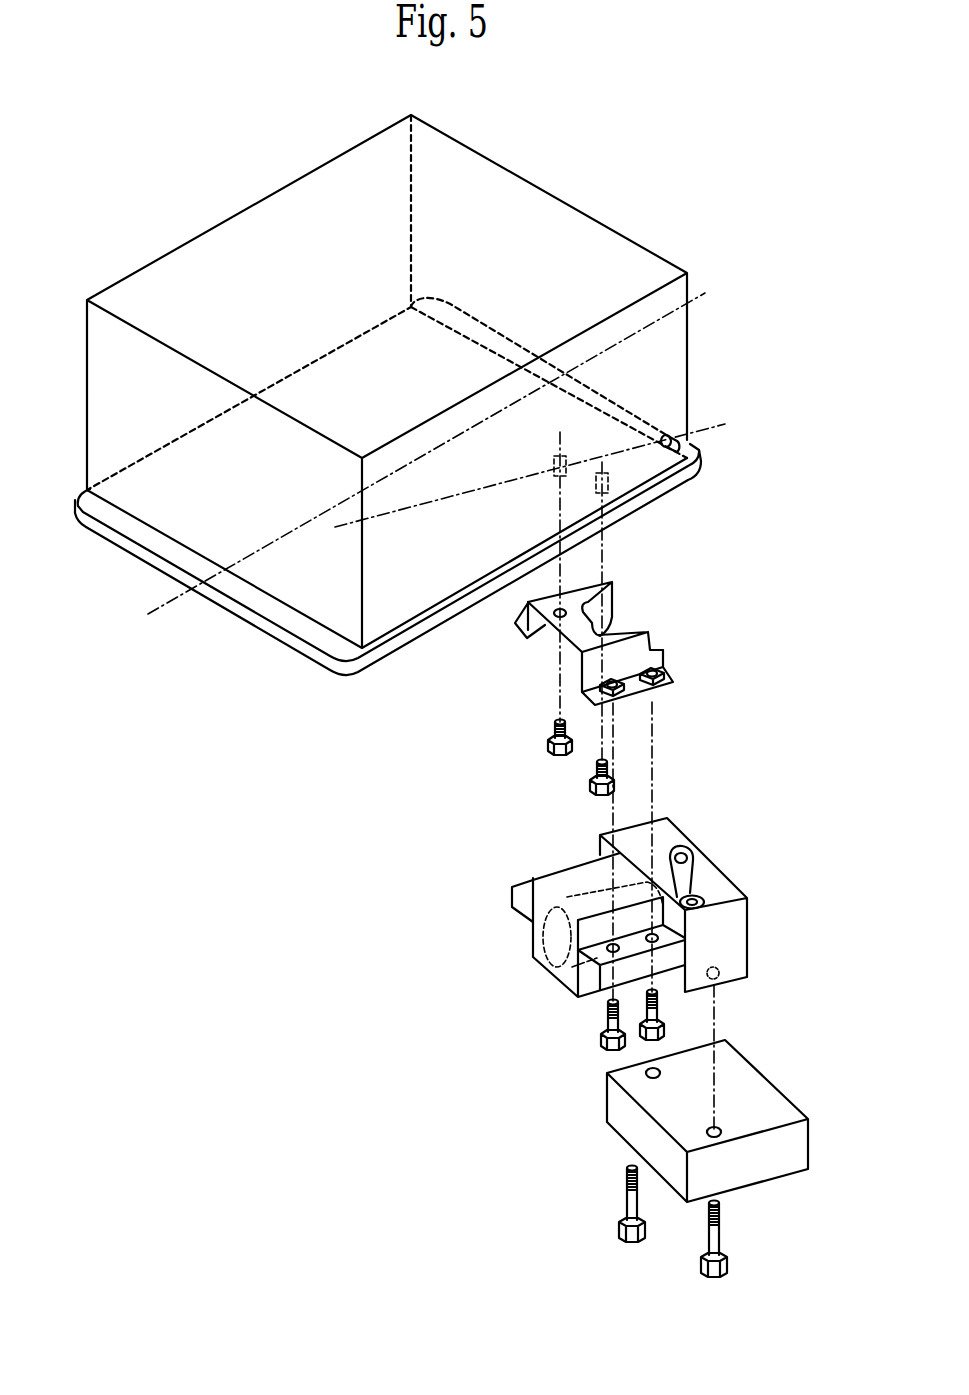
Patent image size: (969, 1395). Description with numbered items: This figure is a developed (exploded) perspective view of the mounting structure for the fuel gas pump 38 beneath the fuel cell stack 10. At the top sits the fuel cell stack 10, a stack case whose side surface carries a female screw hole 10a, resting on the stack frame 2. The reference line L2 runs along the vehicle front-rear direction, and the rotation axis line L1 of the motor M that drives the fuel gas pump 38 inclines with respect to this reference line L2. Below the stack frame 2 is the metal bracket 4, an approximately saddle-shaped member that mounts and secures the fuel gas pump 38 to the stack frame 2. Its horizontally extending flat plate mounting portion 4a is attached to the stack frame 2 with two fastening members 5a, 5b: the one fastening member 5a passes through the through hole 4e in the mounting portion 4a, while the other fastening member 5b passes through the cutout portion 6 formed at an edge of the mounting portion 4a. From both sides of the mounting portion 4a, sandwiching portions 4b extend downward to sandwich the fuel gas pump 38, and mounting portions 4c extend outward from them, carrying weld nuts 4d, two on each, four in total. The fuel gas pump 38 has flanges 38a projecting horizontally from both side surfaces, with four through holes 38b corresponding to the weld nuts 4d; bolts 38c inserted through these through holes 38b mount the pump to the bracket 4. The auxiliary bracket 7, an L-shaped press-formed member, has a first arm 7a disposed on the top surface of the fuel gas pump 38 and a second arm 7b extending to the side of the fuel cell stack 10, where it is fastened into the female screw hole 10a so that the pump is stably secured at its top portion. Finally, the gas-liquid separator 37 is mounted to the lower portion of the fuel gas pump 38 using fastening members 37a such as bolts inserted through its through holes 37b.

The fuel cell stack 10 is at (230, 232).
The female screw hole 10a is at (680, 443).
The stack frame 2 is at (125, 528).
The reference line L2 is at (147, 615).
The cutout portion 6 is at (636, 717).
The bracket 4 is at (636, 717).
The mounting portion 4a is at (633, 583).
The sandwiching portion 4b is at (663, 651).
The mounting portion 4c is at (570, 698).
The weld nut 4d is at (677, 683).
The through hole 4e is at (562, 609).
The fastening member 5a is at (547, 742).
The fastening member 5b is at (590, 790).
The fuel gas pump 38 is at (630, 974).
The flange 38a is at (510, 893).
The through hole 38b is at (608, 952).
The bolt 38c is at (600, 1045).
The auxiliary bracket 7 is at (781, 894).
The first arm 7a is at (695, 902).
The second arm 7b is at (687, 880).
The rotation axis line L1 is at (690, 893).
The motor M is at (533, 958).
The gas-liquid separator 37 is at (635, 1162).
The fastening member 37a is at (703, 1233).
The through hole 37b is at (716, 1136).